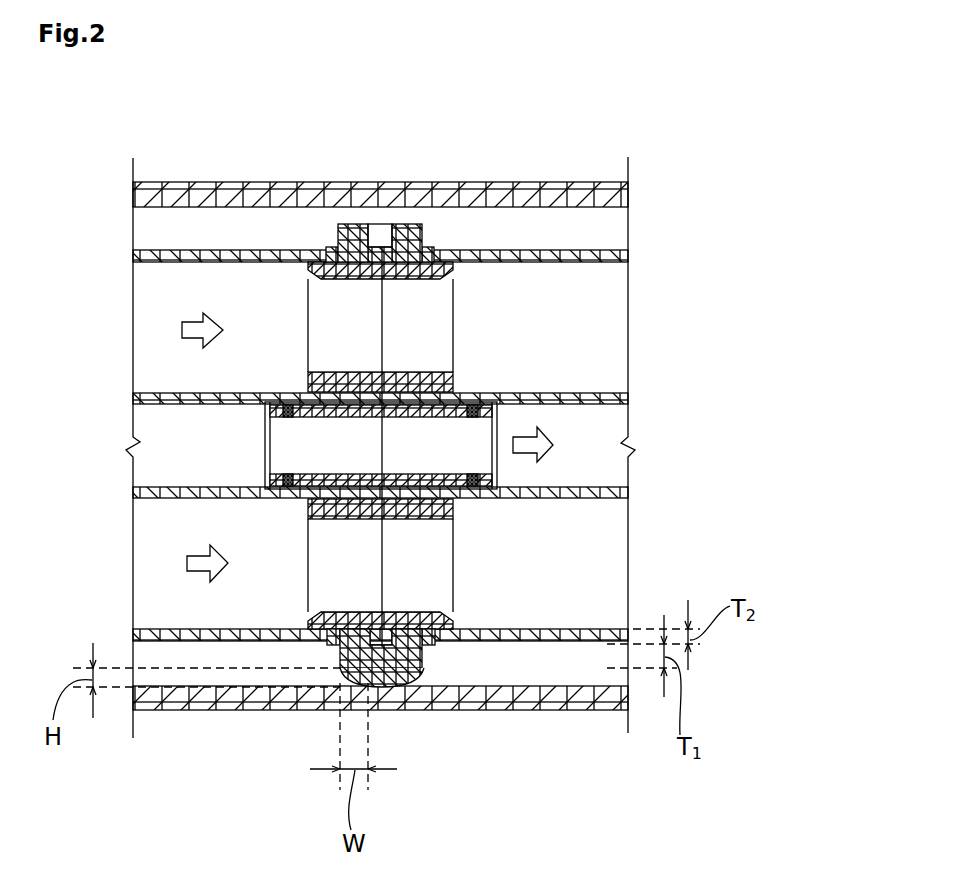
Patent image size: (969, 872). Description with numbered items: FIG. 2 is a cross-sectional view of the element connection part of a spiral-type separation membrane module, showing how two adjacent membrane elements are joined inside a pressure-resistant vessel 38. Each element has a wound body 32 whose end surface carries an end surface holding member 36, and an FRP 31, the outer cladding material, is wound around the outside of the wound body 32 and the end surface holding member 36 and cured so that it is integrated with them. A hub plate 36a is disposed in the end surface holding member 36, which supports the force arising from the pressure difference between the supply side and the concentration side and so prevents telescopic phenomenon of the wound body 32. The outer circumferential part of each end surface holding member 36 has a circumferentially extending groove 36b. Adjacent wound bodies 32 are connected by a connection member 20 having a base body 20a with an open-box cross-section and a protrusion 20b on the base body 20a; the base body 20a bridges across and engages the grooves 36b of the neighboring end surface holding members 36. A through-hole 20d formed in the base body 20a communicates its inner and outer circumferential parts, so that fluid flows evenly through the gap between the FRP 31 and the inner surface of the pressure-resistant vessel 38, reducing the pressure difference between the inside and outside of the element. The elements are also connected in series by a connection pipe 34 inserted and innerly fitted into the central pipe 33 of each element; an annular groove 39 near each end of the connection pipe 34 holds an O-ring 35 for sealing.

The connection member 20 is at (446, 448).
The base body 20a is at (427, 668).
The protrusion 20b is at (398, 684).
The through-hole 20d is at (382, 232).
The FRP (outer cladding material) 31 is at (580, 256).
The wound body 32 is at (152, 294).
The central pipe 33 is at (547, 393).
The connection pipe 34 is at (465, 404).
The O-ring 35 is at (474, 488).
The end surface holding member 36 is at (327, 247).
The hub plate 36a is at (308, 321).
The groove 36b is at (353, 246).
The pressure-resistant vessel 38 is at (520, 182).
The annular groove 39 is at (288, 474).